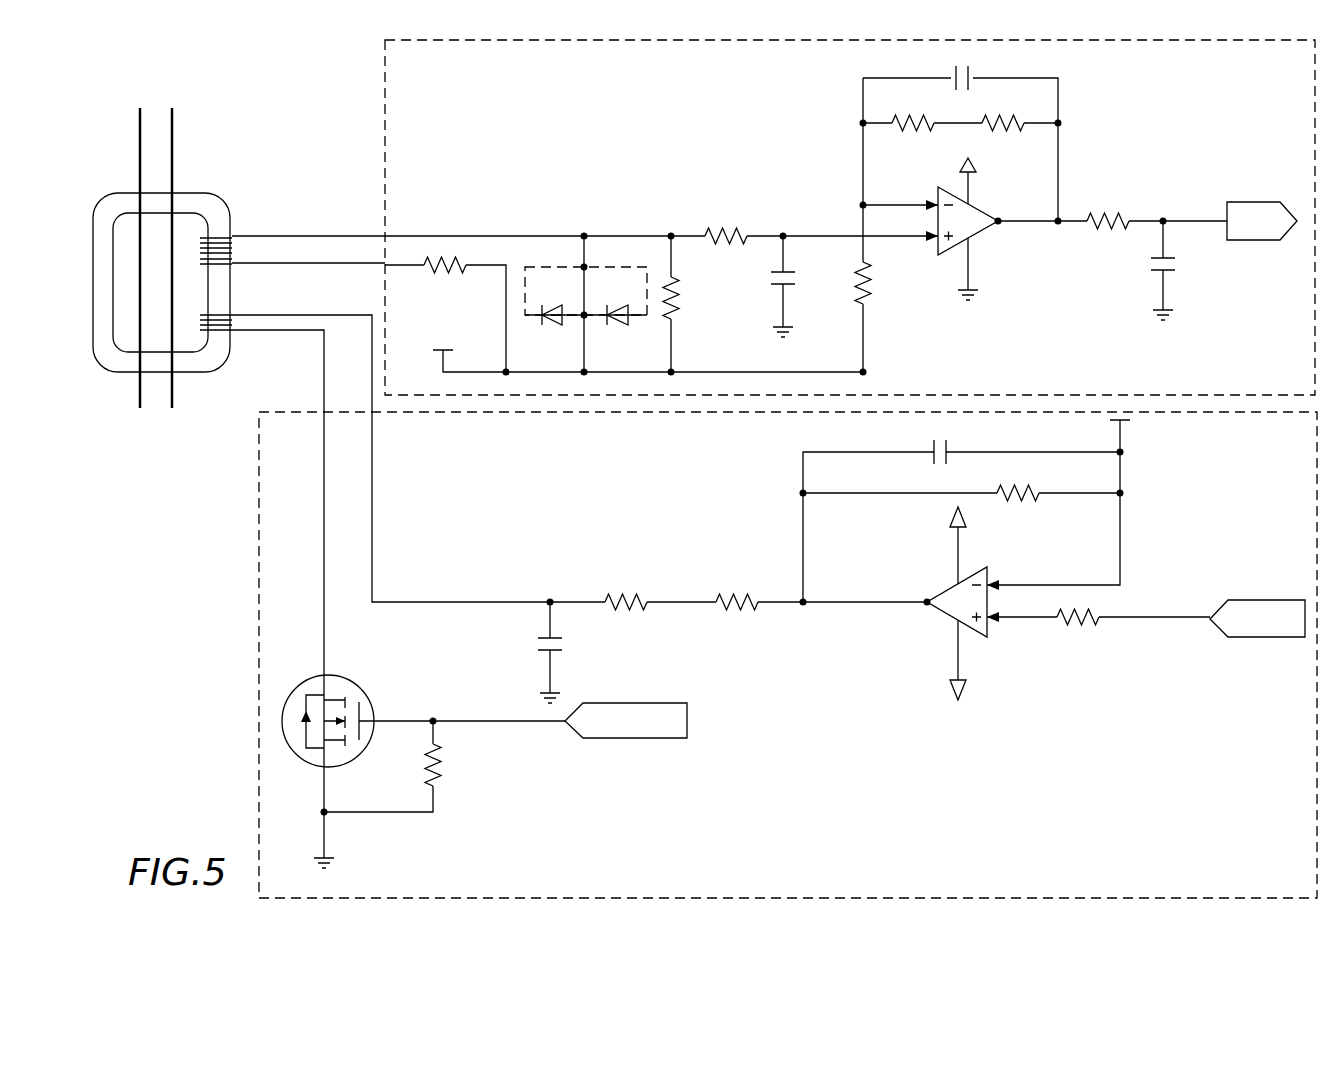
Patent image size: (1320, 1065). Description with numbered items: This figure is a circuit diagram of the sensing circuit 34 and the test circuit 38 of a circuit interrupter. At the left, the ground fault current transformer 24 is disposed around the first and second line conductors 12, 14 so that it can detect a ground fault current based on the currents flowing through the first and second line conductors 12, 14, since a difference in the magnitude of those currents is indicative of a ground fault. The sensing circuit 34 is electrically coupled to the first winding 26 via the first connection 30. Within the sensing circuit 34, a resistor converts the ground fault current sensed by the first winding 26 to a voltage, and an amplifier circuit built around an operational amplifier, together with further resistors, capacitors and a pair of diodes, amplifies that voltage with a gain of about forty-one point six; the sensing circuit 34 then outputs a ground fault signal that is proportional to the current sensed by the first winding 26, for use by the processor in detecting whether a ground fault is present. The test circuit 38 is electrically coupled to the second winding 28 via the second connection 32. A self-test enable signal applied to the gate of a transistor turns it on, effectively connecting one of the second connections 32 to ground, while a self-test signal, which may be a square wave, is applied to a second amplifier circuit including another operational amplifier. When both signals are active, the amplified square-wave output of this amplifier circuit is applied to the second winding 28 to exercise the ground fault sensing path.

The first line conductor 12 is at (140, 114).
The second line conductor 14 is at (172, 122).
The ground fault current transformer 24 is at (106, 199).
The first winding 26 is at (226, 235).
The second winding 28 is at (229, 342).
The first connection 30 is at (323, 261).
The second connection 32 is at (291, 318).
The sensing circuit 34 is at (385, 66).
The test circuit 38 is at (259, 628).